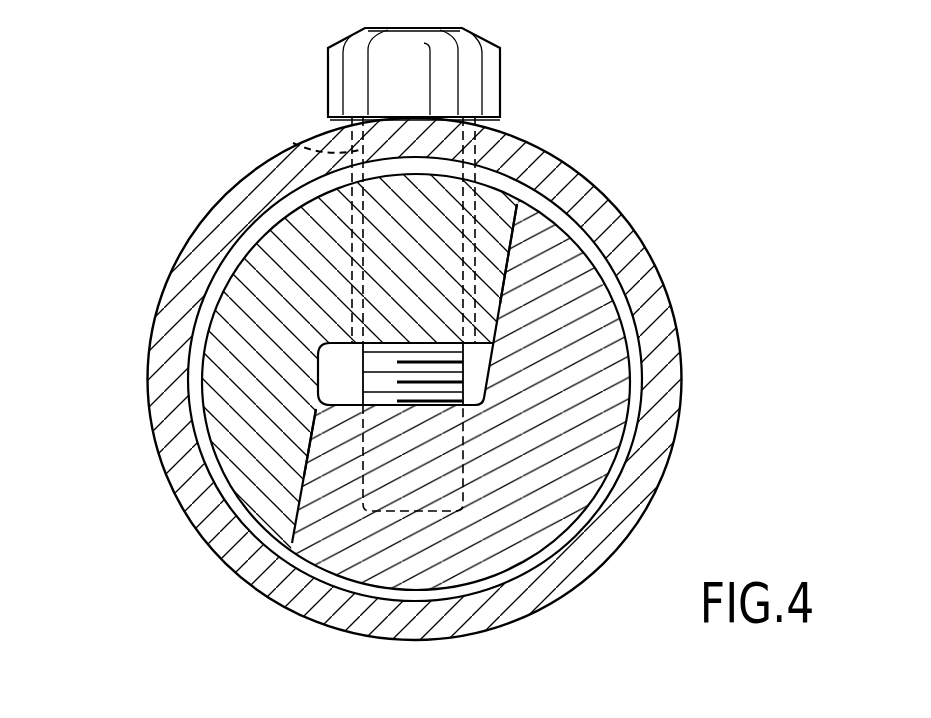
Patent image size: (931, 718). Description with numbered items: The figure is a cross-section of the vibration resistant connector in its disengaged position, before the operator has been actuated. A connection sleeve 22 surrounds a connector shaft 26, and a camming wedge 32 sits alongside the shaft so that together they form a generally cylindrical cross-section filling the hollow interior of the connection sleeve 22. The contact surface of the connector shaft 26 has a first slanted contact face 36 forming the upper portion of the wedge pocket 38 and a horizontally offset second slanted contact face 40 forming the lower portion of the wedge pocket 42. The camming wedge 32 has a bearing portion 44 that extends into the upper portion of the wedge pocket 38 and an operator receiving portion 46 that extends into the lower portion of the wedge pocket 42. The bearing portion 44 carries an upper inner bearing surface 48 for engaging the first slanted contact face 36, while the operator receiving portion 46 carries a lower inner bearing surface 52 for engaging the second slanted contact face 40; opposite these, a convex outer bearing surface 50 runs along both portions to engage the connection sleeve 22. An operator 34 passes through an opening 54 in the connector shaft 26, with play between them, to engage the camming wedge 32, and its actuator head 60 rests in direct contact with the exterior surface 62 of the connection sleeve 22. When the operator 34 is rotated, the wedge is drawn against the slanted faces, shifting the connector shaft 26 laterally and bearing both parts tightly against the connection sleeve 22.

The connection sleeve 22 is at (663, 358).
The connector shaft 26 is at (258, 256).
The camming wedge 32 is at (513, 547).
The operator 34 is at (447, 375).
The first slanted contact face 36 is at (517, 205).
The upper portion of the wedge pocket 38 is at (528, 212).
The second slanted contact face 40 is at (300, 507).
The lower portion of the wedge pocket 42 is at (343, 377).
The bearing portion 44 is at (507, 262).
The operator receiving portion 46 is at (357, 542).
The upper inner bearing surface 48 is at (573, 291).
The convex outer bearing surface 50 is at (620, 307).
The lower inner bearing surface 52 is at (300, 507).
The opening 54 is at (293, 144).
The actuator head 60 is at (503, 50).
The exterior surface 62 is at (472, 123).